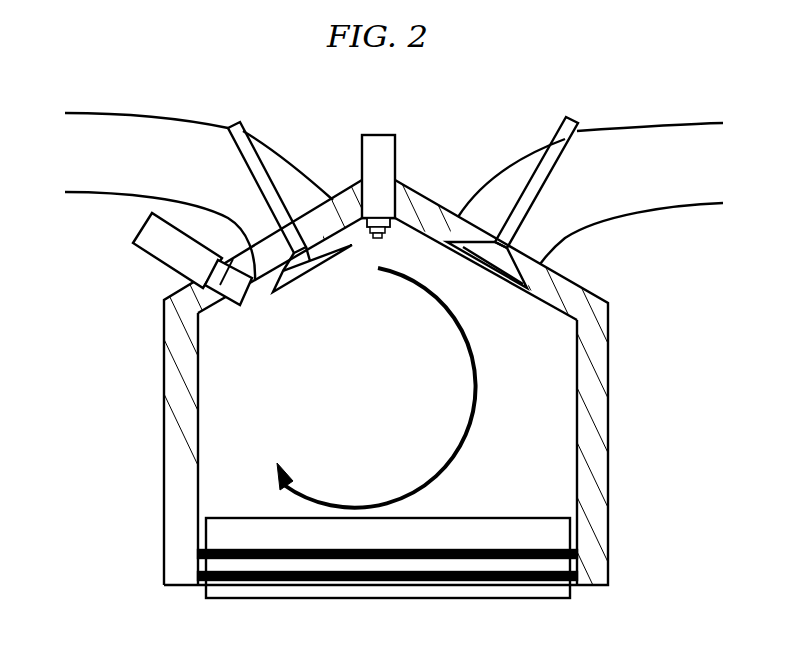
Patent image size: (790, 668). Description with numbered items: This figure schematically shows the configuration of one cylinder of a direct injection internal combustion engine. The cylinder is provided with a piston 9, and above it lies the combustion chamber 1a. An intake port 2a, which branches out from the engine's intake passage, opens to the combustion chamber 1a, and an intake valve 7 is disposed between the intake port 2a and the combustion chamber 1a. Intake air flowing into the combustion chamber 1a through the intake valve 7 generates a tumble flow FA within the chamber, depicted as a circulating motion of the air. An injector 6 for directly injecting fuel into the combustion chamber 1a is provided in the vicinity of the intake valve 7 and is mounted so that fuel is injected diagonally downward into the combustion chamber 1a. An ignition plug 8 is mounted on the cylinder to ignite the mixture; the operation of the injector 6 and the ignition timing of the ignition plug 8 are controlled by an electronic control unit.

The combustion chamber 1a is at (396, 319).
The intake port 2a is at (115, 193).
The injector 6 is at (153, 260).
The intake valve 7 is at (252, 150).
The ignition plug 8 is at (395, 152).
The piston 9 is at (500, 517).
The tumble flow FA is at (477, 393).